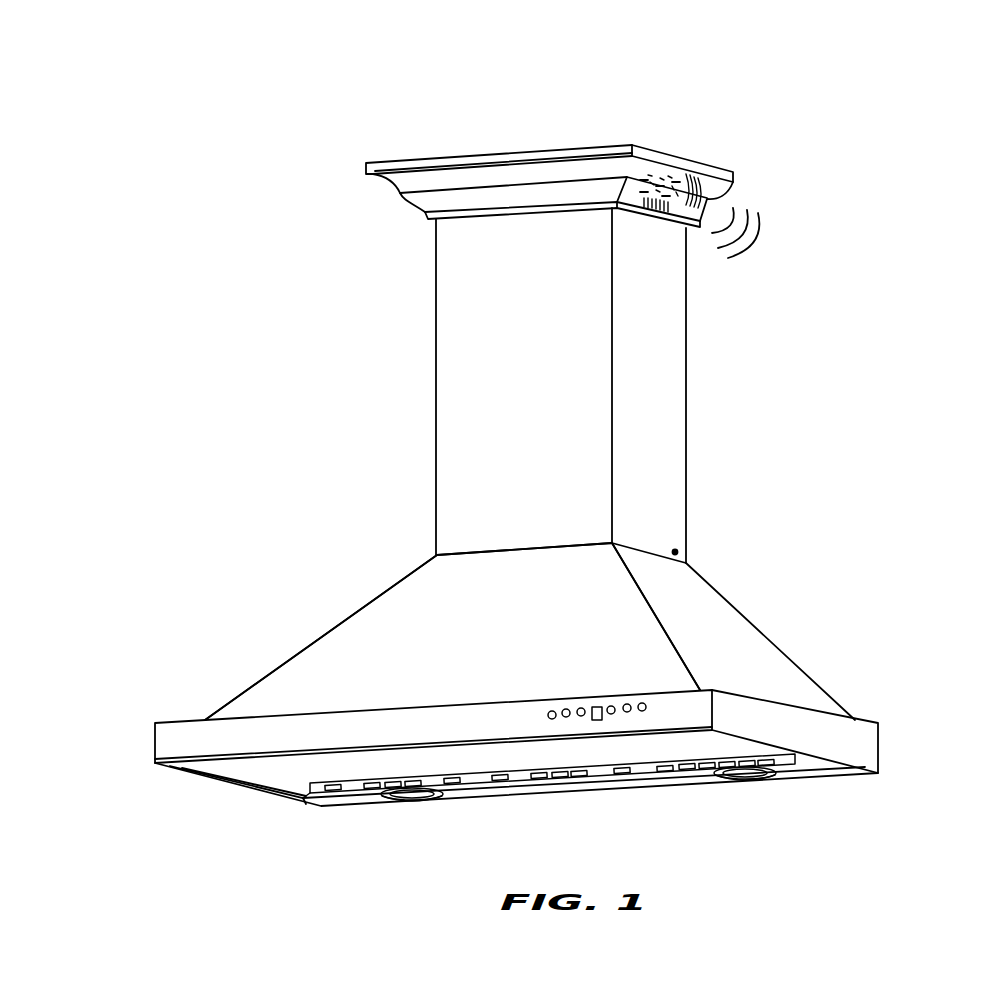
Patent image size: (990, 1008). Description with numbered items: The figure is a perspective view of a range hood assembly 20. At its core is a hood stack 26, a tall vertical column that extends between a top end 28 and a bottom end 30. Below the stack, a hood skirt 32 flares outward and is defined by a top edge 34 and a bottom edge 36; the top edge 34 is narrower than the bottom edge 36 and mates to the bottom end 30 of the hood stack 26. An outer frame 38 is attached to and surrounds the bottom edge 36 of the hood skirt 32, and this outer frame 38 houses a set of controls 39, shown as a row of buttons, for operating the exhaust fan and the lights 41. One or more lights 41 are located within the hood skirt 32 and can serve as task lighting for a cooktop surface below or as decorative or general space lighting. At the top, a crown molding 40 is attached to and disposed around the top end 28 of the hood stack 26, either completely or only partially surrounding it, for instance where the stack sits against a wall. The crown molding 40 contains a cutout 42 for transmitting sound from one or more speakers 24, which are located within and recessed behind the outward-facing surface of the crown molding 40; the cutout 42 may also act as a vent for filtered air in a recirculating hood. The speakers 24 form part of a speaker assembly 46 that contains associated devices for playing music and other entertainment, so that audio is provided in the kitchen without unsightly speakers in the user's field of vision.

The range hood assembly 20 is at (702, 90).
The speakers 24 is at (687, 160).
The hood stack 26 is at (684, 378).
The top end 28 is at (450, 226).
The bottom end 30 is at (452, 528).
The hood skirt 32 is at (765, 646).
The top edge 34 is at (422, 566).
The bottom edge 36 is at (262, 703).
The outer frame 38 is at (867, 758).
The controls 39 is at (648, 712).
The crown molding 40 is at (547, 178).
The lights 41 is at (412, 802).
The cutout 42 is at (735, 175).
The speaker assembly 46 is at (666, 164).